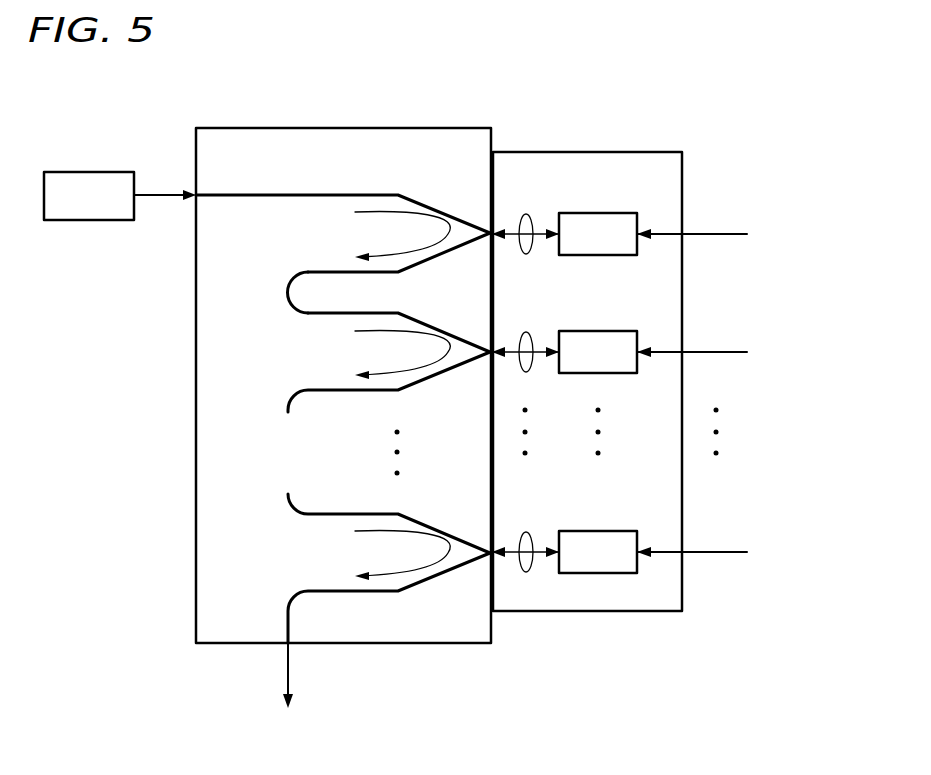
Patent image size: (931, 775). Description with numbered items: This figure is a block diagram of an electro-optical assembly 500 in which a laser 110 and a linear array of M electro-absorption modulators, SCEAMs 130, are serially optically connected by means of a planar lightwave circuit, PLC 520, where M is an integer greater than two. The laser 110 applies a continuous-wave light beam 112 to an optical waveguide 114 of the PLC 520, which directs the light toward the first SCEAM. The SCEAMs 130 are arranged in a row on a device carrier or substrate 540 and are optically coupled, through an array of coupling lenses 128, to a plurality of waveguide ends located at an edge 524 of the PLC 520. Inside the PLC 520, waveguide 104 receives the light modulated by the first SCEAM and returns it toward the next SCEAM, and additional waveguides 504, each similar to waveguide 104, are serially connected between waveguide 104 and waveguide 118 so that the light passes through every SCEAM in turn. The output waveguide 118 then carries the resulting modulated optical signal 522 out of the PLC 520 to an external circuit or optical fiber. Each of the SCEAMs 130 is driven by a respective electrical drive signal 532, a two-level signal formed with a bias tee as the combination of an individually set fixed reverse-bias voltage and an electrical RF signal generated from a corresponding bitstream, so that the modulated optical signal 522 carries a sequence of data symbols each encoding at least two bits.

The electro-optical assembly 500 is at (105, 92).
The laser 110 is at (88, 171).
The continuous-wave light beam 112 is at (160, 199).
The optical waveguide 114 is at (291, 194).
The PLC 520 is at (341, 127).
The device carrier or substrate 540 is at (592, 151).
The waveguide 104 is at (286, 293).
The additional waveguides 504 is at (277, 521).
The coupling lenses 128 is at (525, 530).
The SCEAMs 130 is at (599, 530).
The electrical drive signals 532 is at (714, 550).
The waveguide 118 is at (285, 608).
The modulated optical signal 522 is at (285, 672).
The edge of PLC 524 is at (498, 636).